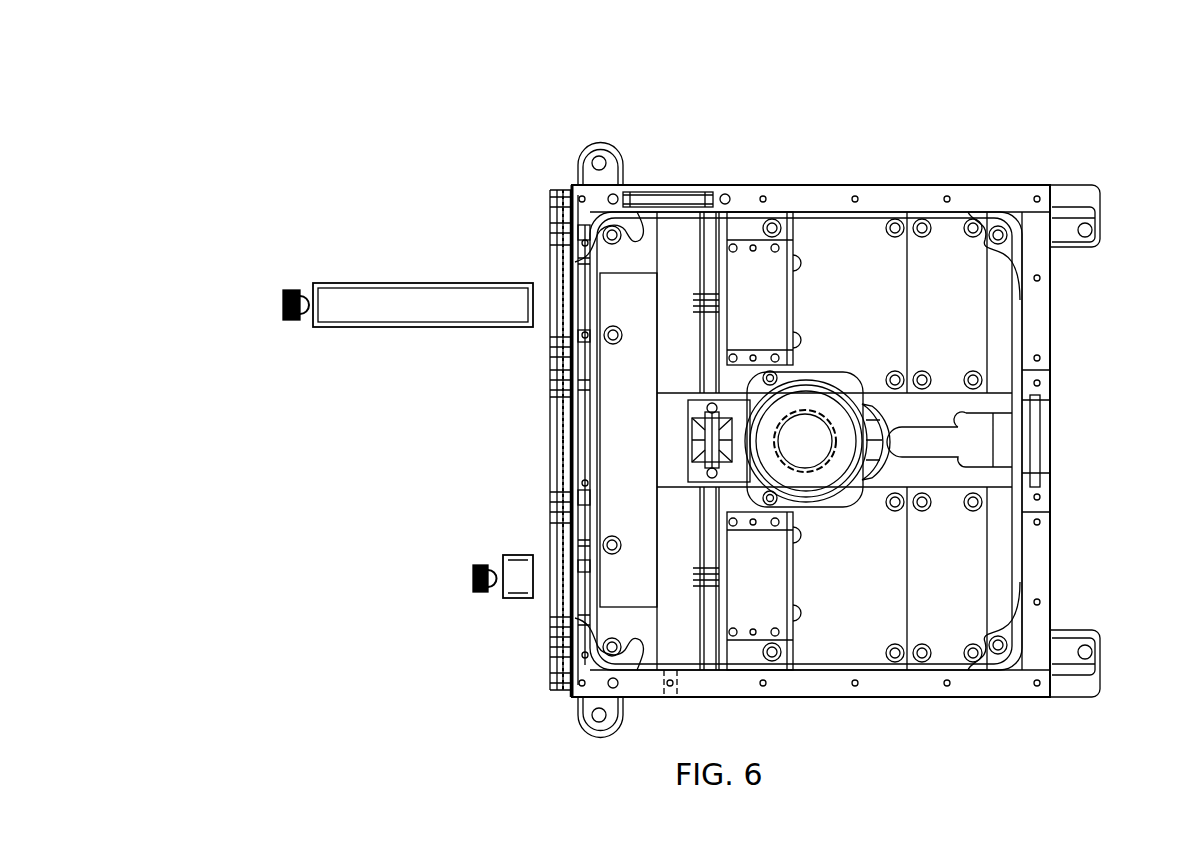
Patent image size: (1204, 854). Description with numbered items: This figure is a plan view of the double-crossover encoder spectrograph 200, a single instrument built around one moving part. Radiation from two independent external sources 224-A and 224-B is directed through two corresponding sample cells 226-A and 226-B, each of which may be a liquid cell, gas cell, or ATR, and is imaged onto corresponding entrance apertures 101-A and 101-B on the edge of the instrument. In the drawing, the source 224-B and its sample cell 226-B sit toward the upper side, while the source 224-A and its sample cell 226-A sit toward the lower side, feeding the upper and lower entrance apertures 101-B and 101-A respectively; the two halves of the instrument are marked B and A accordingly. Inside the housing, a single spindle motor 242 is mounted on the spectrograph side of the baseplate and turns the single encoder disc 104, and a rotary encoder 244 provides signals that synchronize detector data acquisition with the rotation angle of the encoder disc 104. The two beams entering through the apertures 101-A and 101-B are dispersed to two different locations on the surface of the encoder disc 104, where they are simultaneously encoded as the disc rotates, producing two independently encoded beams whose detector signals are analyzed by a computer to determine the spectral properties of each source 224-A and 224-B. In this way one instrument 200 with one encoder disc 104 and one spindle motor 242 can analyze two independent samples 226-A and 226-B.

The double-crossover encoder spectrograph 200 is at (310, 130).
The second external radiation source 224-B is at (283, 288).
The second sample cell 226-B is at (425, 277).
The second entrance aperture 101-B is at (556, 285).
The first sample cell 226-A is at (517, 555).
The first external radiation source 224-A is at (470, 577).
The first entrance aperture 101-A is at (560, 588).
The spindle motor 242 is at (815, 408).
The rotary encoder 244 is at (866, 288).
The encoder disc 104 is at (998, 440).
The lower section A is at (1015, 572).
The upper section B is at (1015, 305).